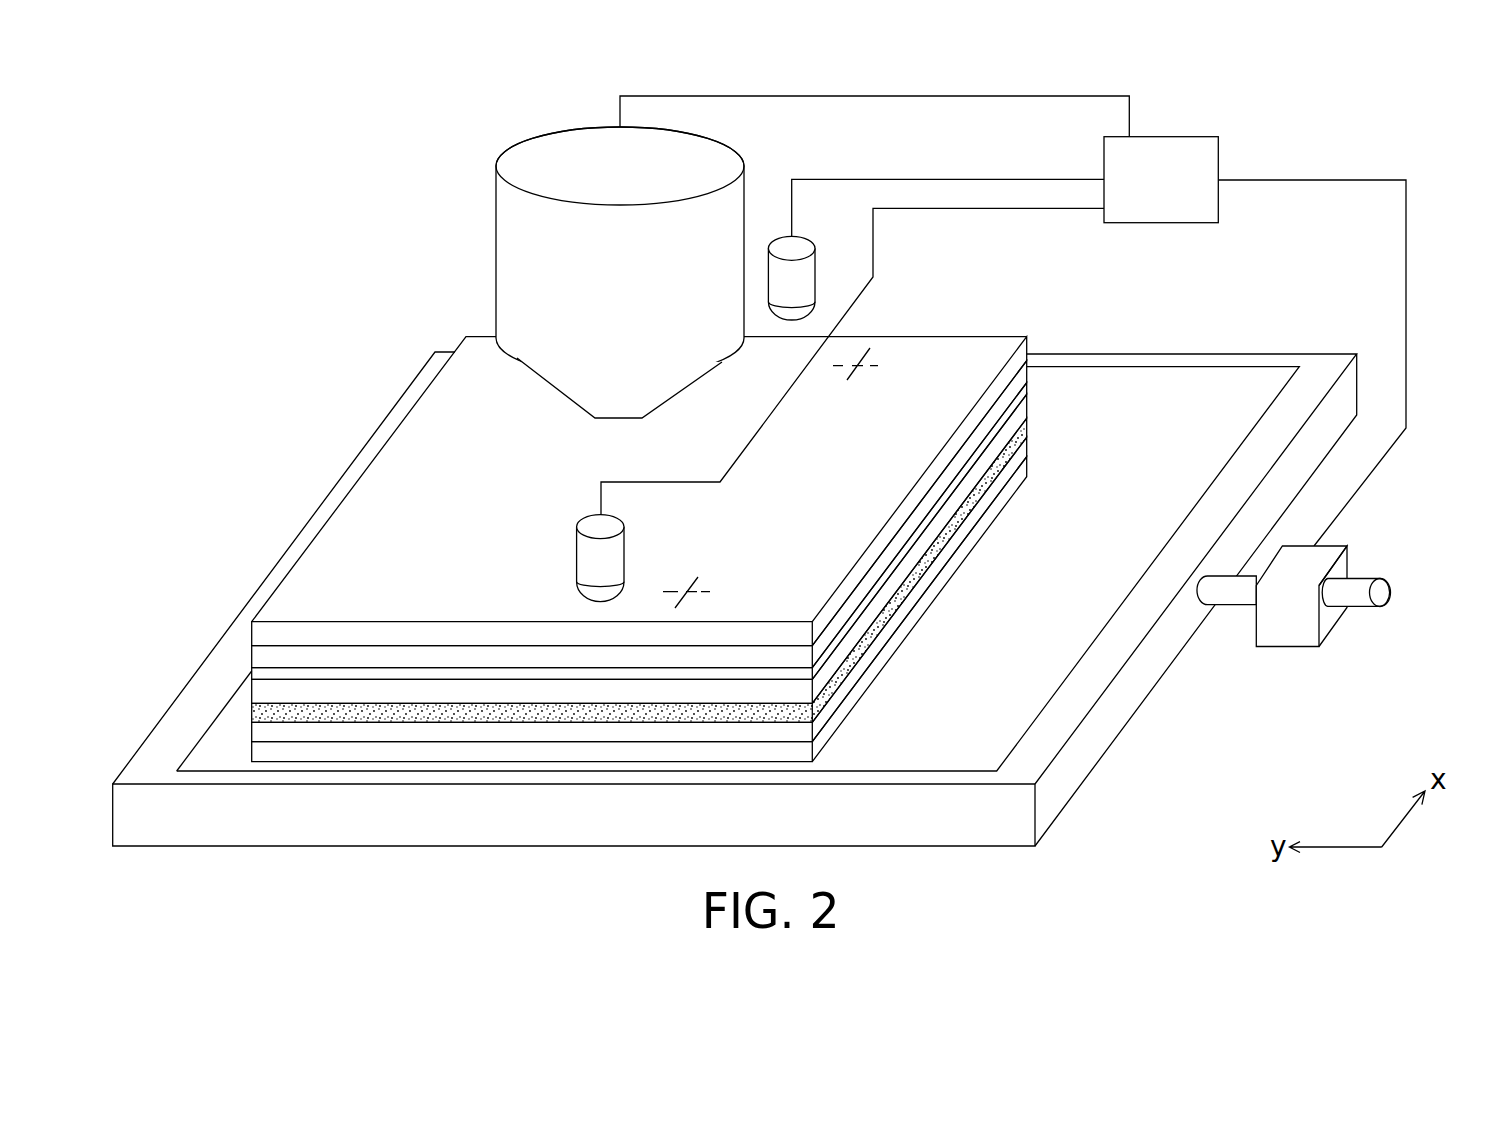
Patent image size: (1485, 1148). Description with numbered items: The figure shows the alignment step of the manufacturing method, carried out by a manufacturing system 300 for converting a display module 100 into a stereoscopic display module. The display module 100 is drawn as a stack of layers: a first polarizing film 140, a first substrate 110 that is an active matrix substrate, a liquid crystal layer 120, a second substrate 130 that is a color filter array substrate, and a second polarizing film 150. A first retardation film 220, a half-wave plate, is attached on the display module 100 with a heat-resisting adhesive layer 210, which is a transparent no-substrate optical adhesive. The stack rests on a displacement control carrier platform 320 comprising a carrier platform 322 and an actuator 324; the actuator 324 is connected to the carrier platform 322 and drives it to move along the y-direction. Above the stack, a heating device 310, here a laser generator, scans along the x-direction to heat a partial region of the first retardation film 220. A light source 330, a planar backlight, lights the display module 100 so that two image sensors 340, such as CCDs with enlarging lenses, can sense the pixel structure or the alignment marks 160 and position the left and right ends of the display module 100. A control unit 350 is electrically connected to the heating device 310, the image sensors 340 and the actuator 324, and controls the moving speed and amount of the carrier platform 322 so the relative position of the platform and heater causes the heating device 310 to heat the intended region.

The display module 100 is at (677, 521).
The first substrate 110 is at (853, 680).
The liquid crystal layer 120 is at (865, 641).
The second substrate 130 is at (872, 610).
The first polarizing film 140 is at (843, 712).
The second polarizing film 150 is at (895, 564).
The alignment mark 160 is at (877, 366).
The heat-resisting adhesive layer 210 is at (945, 479).
The first retardation film 220 is at (952, 448).
The manufacturing system 300 is at (792, 495).
The heating device 310 is at (527, 250).
The displacement control carrier platform 320 is at (1269, 673).
The carrier platform 322 is at (1148, 684).
The actuator 324 is at (1289, 628).
The light source 330 is at (217, 751).
The image sensor 340 is at (810, 247).
The control unit 350 is at (1195, 137).